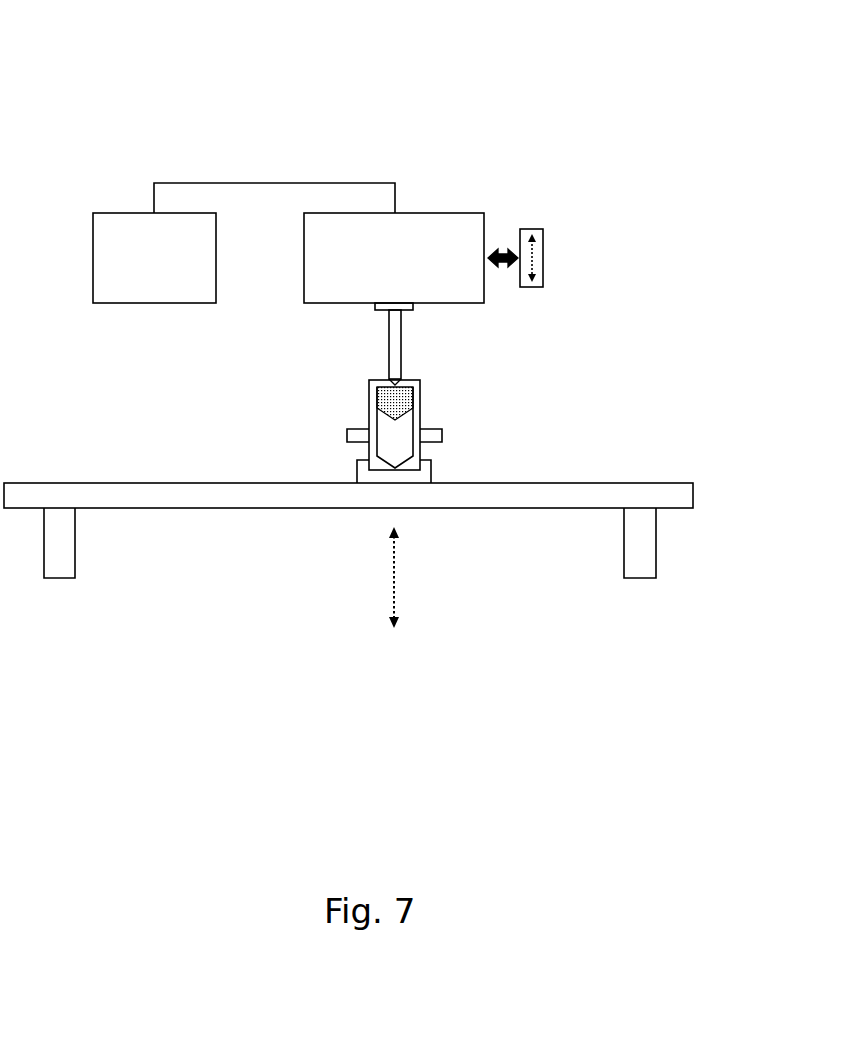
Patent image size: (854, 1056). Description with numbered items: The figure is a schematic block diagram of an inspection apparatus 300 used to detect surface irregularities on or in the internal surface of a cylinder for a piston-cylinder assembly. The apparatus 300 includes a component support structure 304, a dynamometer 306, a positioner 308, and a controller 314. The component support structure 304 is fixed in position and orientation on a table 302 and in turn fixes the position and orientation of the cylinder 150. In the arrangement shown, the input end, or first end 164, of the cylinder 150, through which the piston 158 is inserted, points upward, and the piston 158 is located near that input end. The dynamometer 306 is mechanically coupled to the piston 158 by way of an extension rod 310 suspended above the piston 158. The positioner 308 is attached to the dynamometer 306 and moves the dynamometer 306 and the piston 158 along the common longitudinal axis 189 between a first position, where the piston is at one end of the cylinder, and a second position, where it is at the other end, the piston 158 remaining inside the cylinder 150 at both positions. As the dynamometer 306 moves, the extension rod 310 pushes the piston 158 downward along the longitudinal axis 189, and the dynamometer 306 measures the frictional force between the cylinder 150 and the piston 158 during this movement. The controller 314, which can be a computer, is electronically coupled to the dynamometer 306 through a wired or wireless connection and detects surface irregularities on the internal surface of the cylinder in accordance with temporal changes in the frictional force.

The inspection apparatus 300 is at (190, 95).
The controller 314 is at (93, 272).
The dynamometer 306 is at (428, 213).
The positioner 308 is at (533, 230).
The extension rod 310 is at (403, 344).
The cylinder 150 is at (437, 397).
The piston 158 is at (416, 396).
The first end 164 is at (383, 378).
The component support structure 304 is at (357, 472).
The table 302 is at (137, 482).
The common longitudinal axis 189 is at (402, 560).